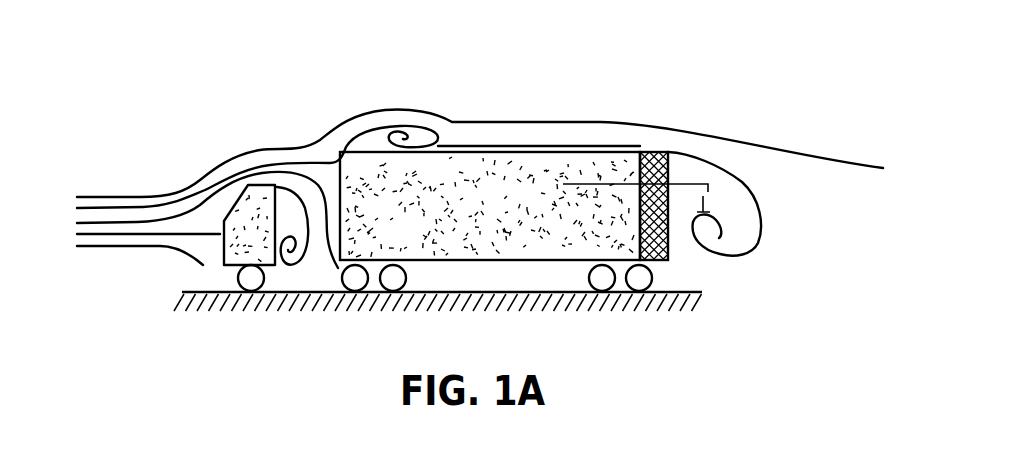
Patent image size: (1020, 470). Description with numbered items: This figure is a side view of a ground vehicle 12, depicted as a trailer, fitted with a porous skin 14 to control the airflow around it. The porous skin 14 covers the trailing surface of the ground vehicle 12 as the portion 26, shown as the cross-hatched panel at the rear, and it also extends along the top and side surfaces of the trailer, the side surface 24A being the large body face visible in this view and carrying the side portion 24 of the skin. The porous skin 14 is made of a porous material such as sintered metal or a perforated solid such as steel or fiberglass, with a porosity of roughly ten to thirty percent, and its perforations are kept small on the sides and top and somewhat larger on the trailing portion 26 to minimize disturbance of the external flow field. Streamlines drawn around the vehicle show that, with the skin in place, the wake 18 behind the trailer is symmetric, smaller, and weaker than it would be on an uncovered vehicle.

The ground vehicle 12 is at (580, 80).
The porous skin 14 is at (653, 150).
The wake 18 is at (763, 223).
The side portion of porous skin 24 is at (670, 250).
The side surface 24A is at (485, 242).
The trailing surface portion of porous skin 26 is at (668, 235).